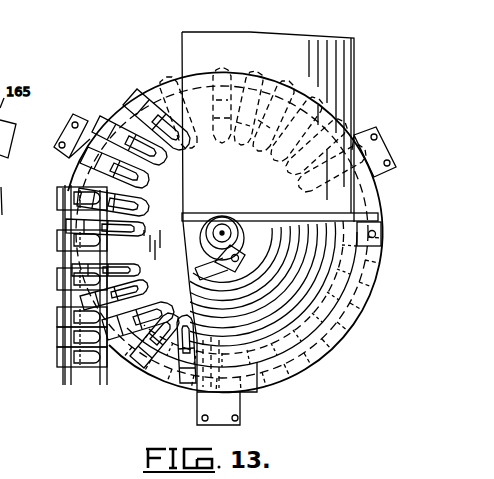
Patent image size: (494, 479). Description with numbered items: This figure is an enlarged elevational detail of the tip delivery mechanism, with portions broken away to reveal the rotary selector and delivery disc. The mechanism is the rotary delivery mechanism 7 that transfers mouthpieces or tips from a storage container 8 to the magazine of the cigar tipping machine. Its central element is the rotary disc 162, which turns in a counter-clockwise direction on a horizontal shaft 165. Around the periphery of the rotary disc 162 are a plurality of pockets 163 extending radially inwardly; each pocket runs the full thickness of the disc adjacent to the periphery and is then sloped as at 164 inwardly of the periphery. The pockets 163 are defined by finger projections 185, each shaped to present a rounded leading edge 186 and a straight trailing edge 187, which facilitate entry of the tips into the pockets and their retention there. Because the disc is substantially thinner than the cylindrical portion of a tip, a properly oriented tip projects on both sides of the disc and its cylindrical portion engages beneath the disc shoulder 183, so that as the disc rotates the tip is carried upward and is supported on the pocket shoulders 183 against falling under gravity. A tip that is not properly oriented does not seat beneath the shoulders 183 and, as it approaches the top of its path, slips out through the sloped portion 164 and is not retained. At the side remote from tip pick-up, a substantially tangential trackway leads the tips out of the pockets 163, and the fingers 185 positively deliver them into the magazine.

The rotary delivery mechanism 7 is at (56, 287).
The storage container 8 is at (0, 34).
The rotary disc 162 is at (256, 228).
The pockets 163 is at (170, 357).
The sloped portion 164 is at (136, 272).
The horizontal shaft 165 is at (232, 226).
The disc shoulder 183 is at (152, 128).
The finger projections 185 is at (168, 98).
The rounded leading edge 186 is at (116, 335).
The straight trailing edge 187 is at (105, 328).